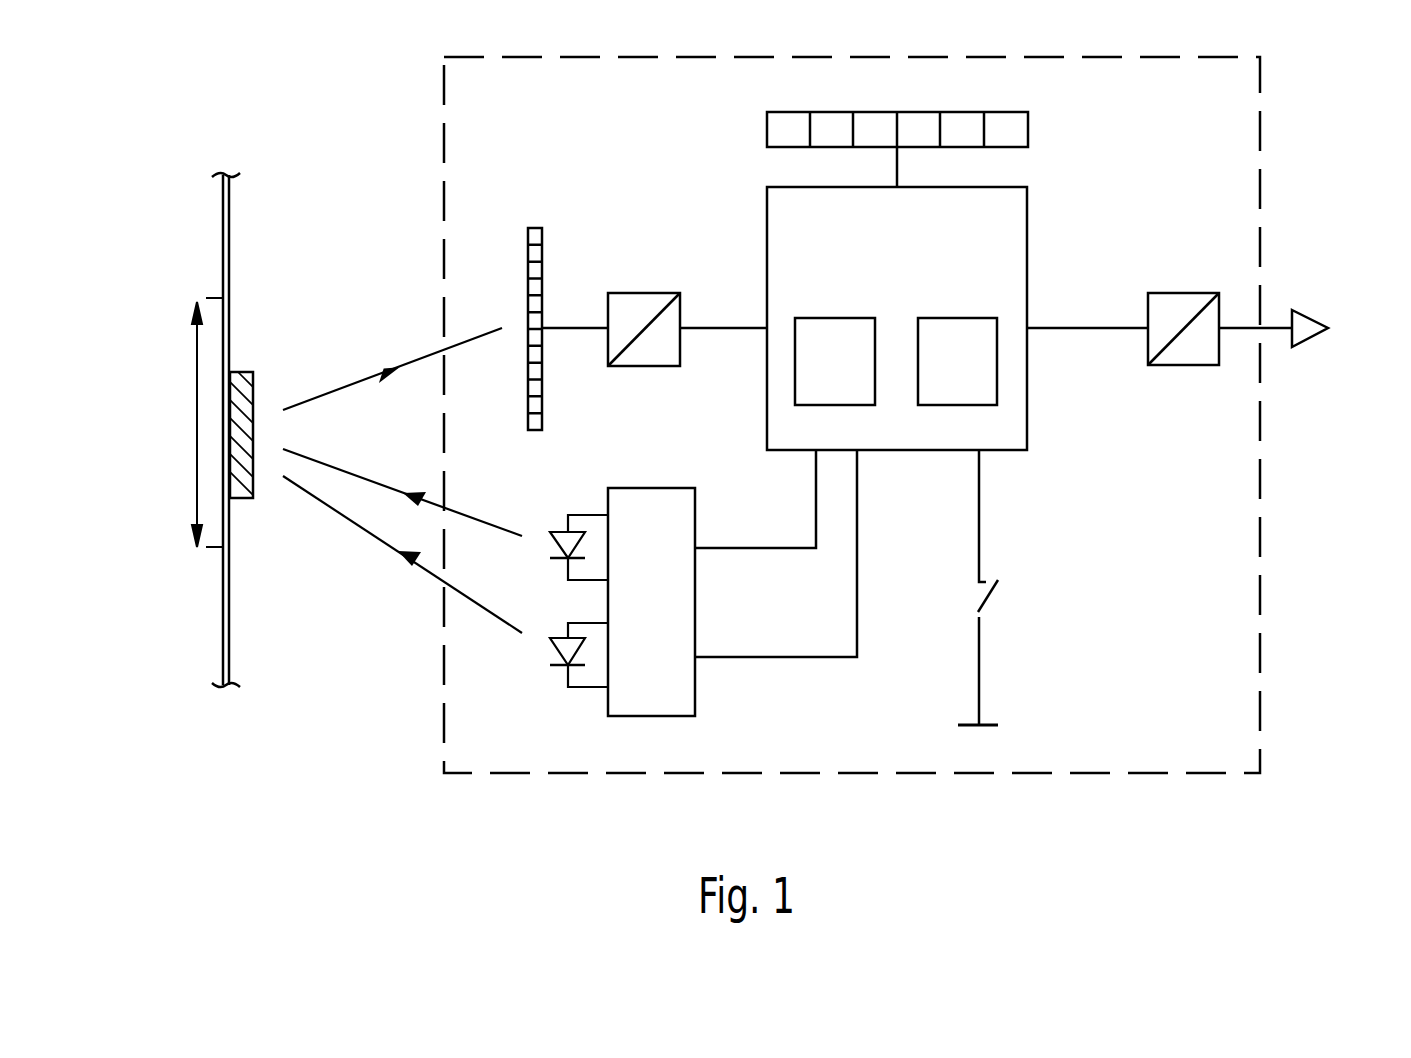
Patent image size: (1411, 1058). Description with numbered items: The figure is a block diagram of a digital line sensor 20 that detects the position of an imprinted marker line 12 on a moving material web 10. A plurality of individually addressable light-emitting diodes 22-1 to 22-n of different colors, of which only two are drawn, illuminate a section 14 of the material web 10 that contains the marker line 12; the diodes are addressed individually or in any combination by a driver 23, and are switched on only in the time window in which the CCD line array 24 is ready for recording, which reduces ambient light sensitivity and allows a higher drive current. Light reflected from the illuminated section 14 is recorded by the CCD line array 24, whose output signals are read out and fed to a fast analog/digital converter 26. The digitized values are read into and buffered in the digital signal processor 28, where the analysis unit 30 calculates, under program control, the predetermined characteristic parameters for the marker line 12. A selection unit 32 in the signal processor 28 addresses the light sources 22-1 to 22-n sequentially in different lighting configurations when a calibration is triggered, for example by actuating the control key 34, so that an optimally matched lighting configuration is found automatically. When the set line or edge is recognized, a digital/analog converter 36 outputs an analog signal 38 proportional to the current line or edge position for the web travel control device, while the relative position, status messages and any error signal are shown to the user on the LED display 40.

The material web 10 is at (230, 207).
The marker line 12 is at (245, 372).
The section of the material web 14 is at (197, 375).
The digital line sensor 20 is at (1262, 518).
The light-emitting diode 22-1 is at (565, 530).
The light-emitting diode 22-n is at (560, 667).
The driver 23 is at (695, 692).
The CCD line array 24 is at (545, 258).
The analog/digital converter 26 is at (640, 366).
The digital signal processor 28 is at (1027, 243).
The analysis unit 30 is at (835, 318).
The selection unit 32 is at (958, 318).
The control key 34 is at (990, 600).
The digital/analog converter 36 is at (1183, 293).
The analog signal 38 is at (1315, 320).
The LED display 40 is at (1028, 130).